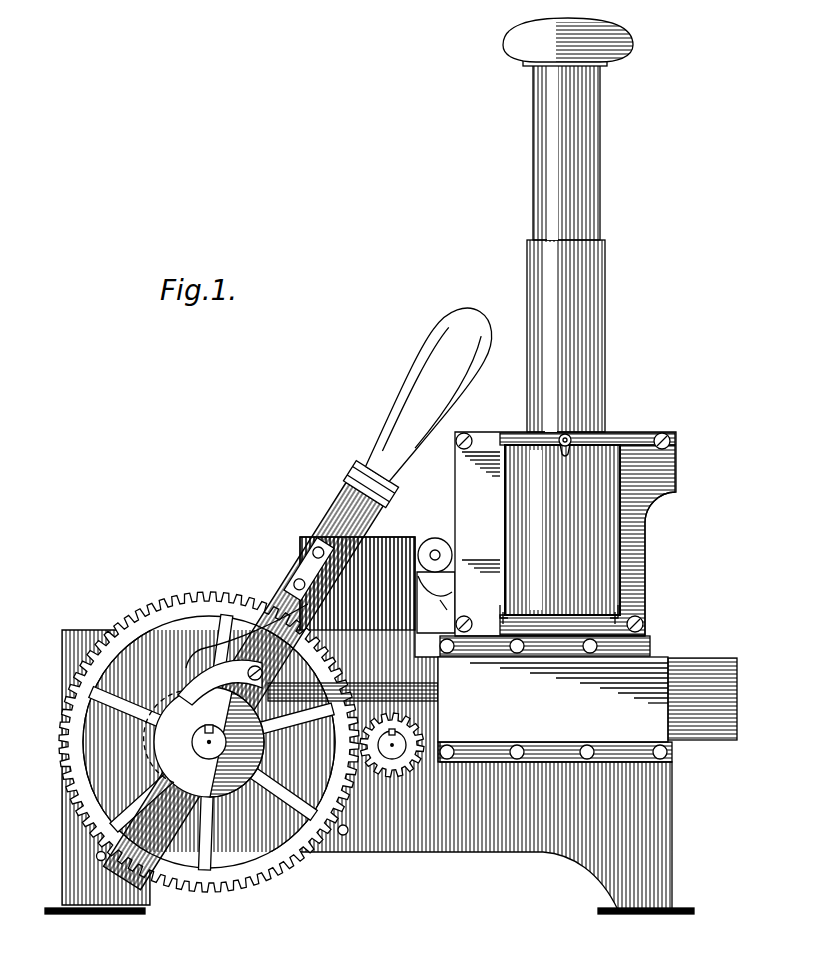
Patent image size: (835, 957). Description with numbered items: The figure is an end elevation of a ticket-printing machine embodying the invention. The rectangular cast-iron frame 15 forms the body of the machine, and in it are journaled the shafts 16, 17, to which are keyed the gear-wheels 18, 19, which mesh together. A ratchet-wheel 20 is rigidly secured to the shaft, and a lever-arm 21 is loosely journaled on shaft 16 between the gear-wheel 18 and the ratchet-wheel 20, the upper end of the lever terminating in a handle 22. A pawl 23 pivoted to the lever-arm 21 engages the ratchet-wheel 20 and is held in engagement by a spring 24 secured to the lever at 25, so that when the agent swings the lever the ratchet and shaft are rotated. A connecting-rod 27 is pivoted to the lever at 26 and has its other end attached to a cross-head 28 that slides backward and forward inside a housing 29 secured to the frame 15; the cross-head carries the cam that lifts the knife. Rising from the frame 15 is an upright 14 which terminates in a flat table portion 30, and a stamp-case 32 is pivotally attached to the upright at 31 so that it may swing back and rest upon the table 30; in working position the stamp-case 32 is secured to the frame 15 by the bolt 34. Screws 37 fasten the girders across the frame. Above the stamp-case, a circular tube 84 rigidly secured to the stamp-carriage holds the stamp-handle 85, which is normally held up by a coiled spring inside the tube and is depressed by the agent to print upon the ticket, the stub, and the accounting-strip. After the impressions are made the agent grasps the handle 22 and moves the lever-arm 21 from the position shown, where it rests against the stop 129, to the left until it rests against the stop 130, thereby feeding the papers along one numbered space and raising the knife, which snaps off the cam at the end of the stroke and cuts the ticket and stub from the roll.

The upright 14 is at (408, 597).
The frame 15 is at (369, 725).
The shaft 16 is at (205, 742).
The shaft 17 is at (396, 752).
The gear-wheel 18 is at (190, 600).
The gear-wheel 19 is at (380, 768).
The ratchet-wheel 20 is at (233, 790).
The lever-arm 21 is at (250, 676).
The handle 22 is at (429, 393).
The pawl 23 is at (185, 672).
The spring 24 is at (204, 648).
The spring attachment point 25 is at (309, 569).
The pivot 26 is at (272, 742).
The connecting-rod 27 is at (390, 688).
The cross-head 28 is at (702, 699).
The housing 29 is at (553, 699).
The table portion 30 is at (398, 542).
The pivot 31 is at (436, 546).
The stamp-case 32 is at (470, 474).
The bolt 34 is at (572, 436).
The screws 37 is at (503, 610).
The circular tube 84 is at (600, 333).
The stamp-handle 85 is at (600, 172).
The stop 129 is at (97, 854).
The stop 130 is at (343, 836).